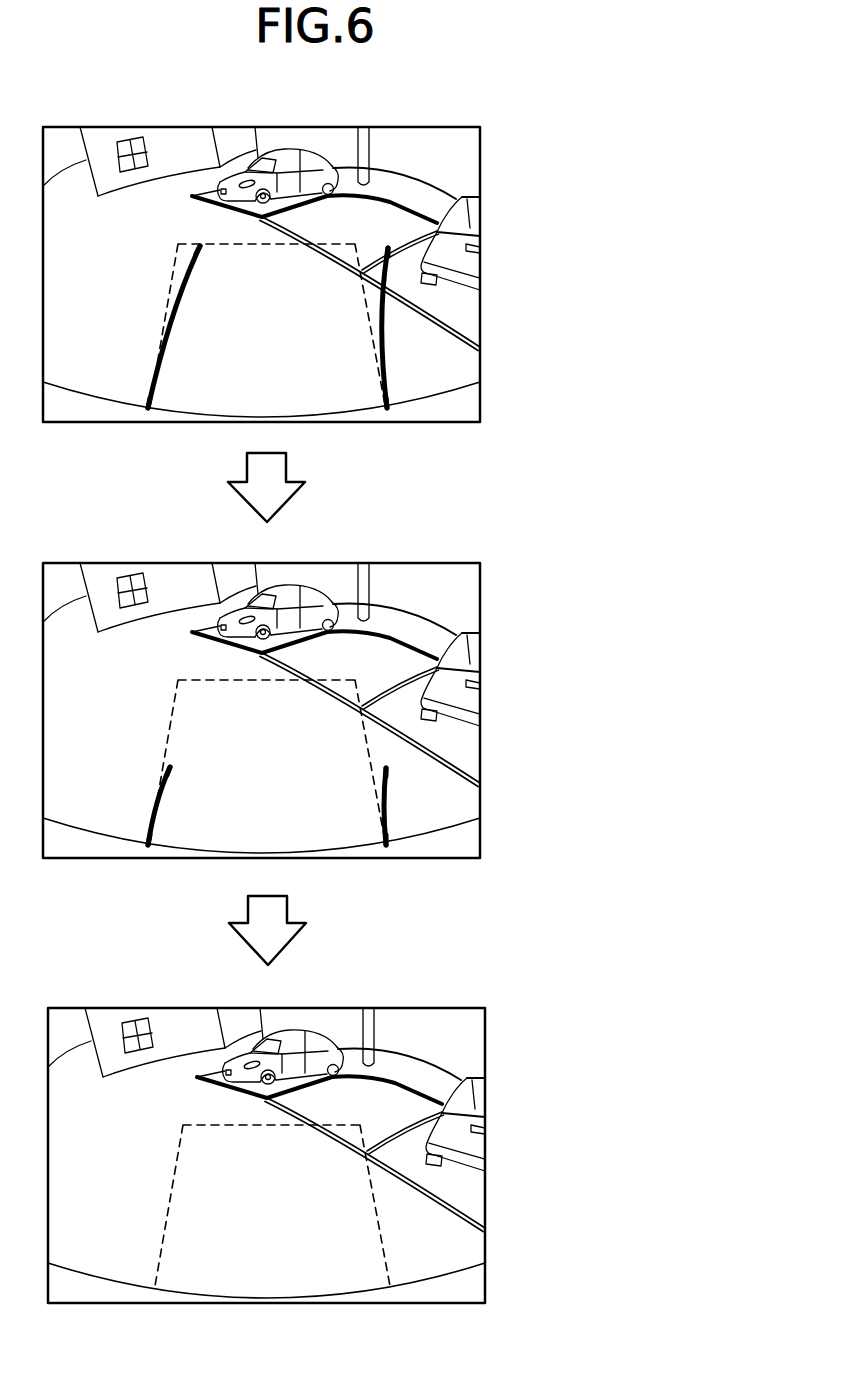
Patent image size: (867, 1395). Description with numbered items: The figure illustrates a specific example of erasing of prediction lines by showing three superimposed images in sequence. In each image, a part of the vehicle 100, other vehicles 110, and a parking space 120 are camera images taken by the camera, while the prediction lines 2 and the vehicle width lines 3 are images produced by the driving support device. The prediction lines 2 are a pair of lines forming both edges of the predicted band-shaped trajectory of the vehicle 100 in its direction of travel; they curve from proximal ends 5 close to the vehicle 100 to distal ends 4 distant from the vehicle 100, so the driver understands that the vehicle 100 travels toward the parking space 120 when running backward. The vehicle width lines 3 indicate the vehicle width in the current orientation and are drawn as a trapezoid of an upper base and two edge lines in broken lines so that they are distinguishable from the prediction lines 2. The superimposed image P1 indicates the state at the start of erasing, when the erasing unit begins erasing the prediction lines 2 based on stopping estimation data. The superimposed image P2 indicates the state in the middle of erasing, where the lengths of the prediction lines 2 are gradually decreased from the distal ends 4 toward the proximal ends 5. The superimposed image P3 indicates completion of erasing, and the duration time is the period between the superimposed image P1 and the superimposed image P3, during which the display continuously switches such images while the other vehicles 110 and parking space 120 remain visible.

The vehicle 100 is at (468, 408).
The other vehicles 110 is at (336, 180).
The parking space 120 is at (380, 222).
The prediction lines 2 is at (188, 287).
The vehicle width lines 3 is at (168, 300).
The distal ends 4 is at (200, 248).
The proximal ends 5 is at (148, 422).
The superimposed image P1 is at (483, 176).
The superimposed image P2 is at (483, 612).
The superimposed image P3 is at (489, 1059).